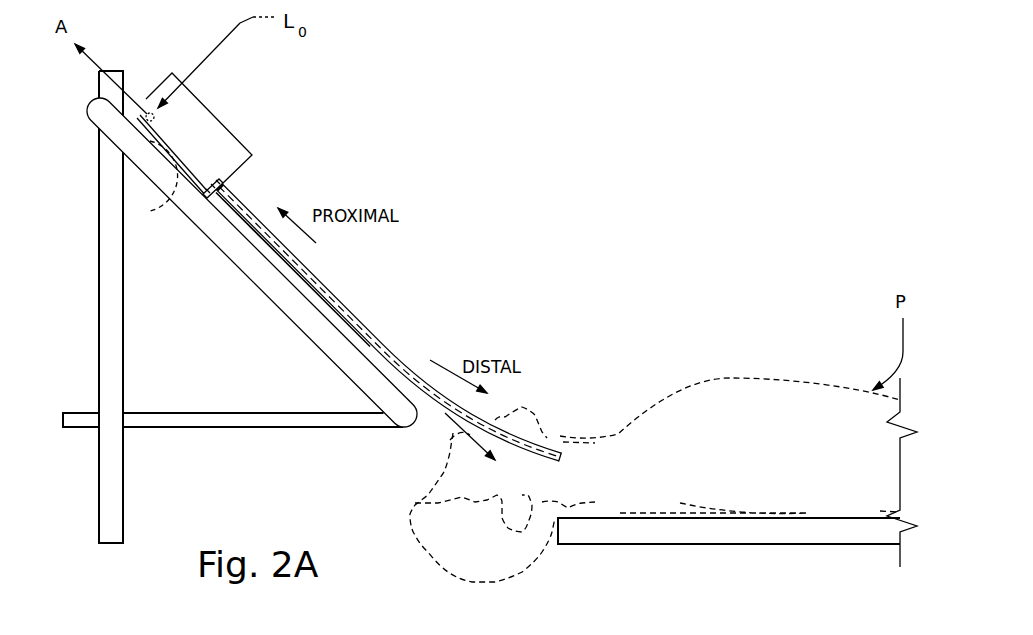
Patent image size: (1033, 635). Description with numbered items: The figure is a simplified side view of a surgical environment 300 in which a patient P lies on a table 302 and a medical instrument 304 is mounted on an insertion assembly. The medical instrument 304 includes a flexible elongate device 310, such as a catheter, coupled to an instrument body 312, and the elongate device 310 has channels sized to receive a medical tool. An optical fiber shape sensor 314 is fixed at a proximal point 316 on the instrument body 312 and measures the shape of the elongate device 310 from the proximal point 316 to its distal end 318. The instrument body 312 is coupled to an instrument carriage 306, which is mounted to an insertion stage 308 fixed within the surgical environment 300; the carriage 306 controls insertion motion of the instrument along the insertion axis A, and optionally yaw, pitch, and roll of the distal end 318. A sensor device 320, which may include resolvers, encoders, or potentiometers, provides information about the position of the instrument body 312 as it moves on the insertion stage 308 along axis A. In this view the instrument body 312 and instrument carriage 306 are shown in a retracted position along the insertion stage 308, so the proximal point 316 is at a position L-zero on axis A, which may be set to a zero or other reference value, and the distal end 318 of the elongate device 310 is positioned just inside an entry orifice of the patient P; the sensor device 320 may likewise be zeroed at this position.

The surgical environment 300 is at (704, 151).
The operating table 302 is at (735, 546).
The medical instrument 304 is at (200, 117).
The instrument carriage 306 is at (228, 178).
The insertion stage 308 is at (243, 273).
The flexible elongate device 310 is at (385, 345).
The instrument body 312 is at (242, 140).
The optical fiber shape sensor 314 is at (318, 283).
The proximal point 316 is at (150, 113).
The distal end 318 is at (540, 450).
The sensor device 320 is at (151, 198).